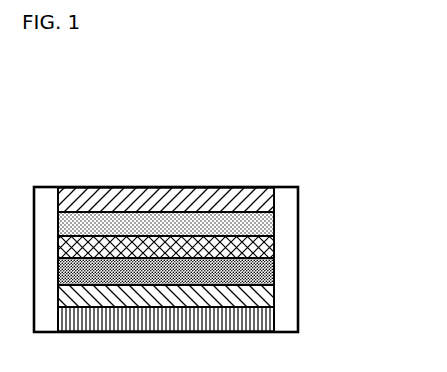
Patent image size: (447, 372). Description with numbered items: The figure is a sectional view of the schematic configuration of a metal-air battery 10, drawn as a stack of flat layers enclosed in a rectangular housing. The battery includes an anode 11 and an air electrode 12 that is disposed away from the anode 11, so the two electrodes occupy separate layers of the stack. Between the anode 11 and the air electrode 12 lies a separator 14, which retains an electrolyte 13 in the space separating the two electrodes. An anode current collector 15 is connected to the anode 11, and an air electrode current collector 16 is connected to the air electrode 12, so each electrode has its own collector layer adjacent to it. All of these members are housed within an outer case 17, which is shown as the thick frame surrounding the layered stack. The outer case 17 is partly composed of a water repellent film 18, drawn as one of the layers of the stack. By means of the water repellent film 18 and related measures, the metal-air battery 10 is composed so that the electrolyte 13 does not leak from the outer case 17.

The metal-air battery 10 is at (245, 87).
The anode 11 is at (276, 226).
The air electrode 12 is at (272, 275).
The electrolyte 13 is at (272, 256).
The separator 14 is at (276, 242).
The anode current collector 15 is at (276, 199).
The air electrode current collector 16 is at (272, 298).
The outer case 17 is at (286, 211).
The water repellent film 18 is at (272, 316).